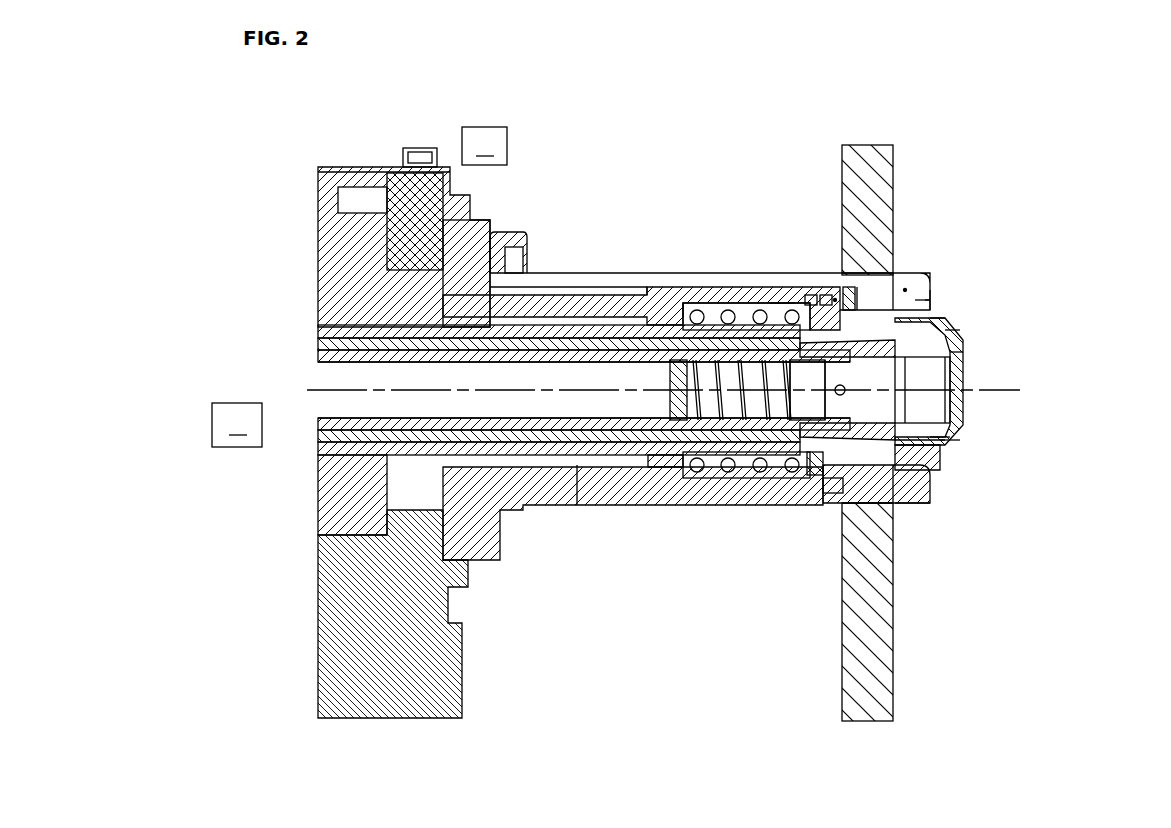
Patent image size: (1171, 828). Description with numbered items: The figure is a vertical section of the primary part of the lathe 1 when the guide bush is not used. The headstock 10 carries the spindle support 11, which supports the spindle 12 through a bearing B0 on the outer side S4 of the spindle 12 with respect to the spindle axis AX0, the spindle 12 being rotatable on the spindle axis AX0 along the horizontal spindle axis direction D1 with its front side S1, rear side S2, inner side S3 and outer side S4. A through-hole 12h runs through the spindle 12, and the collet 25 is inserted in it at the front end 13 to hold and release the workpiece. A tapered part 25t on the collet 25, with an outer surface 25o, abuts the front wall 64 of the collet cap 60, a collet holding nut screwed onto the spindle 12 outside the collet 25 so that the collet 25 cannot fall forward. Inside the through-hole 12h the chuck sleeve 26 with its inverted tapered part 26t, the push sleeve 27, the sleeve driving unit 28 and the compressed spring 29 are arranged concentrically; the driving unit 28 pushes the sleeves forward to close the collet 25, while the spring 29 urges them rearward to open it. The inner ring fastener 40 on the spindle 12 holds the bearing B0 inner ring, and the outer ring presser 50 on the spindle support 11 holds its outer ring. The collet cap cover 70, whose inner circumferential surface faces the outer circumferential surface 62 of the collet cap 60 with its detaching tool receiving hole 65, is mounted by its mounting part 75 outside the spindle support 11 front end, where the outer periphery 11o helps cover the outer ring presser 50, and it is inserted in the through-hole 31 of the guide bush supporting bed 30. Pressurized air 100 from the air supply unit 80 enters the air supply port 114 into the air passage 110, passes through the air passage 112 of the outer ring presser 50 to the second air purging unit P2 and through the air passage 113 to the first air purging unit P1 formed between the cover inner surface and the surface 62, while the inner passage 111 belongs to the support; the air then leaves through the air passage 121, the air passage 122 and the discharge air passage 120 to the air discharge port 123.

The lathe 1 is at (292, 130).
The headstock 10 is at (465, 680).
The spindle support 11 is at (577, 273).
The outer periphery 11o is at (778, 303).
The spindle 12 is at (602, 327).
The through-hole 12h is at (337, 408).
The front end 13 is at (950, 463).
The collet 25 is at (965, 375).
The collet outer surface 25o is at (950, 330).
The tapered part 25t is at (940, 436).
The chuck sleeve 26 is at (945, 437).
The inverted tapered part 26t is at (990, 422).
The push sleeve 27 is at (590, 467).
The sleeve driving unit 28 is at (318, 422).
The compressed spring 29 is at (672, 440).
The guide bush supporting bed 30 is at (893, 685).
The through-hole 31 is at (893, 505).
The inner ring fastener 40 is at (810, 295).
The outer ring presser 50 is at (848, 287).
The collet cap 60 is at (960, 335).
The outer circumferential surface 62 is at (930, 300).
The front wall 64 is at (963, 357).
The detaching tool receiving hole 65 is at (935, 316).
The collet cap cover 70 is at (915, 302).
The mounting part 75 is at (815, 470).
The air supply unit 80 is at (484, 222).
The air 100 is at (493, 175).
The air passage 110 is at (647, 283).
The inner housing 111 is at (702, 300).
The air passage 112 is at (826, 295).
The air passage 113 is at (900, 275).
The air supply port 114 is at (500, 222).
The air passage 120 is at (930, 497).
The air passage 121 is at (832, 503).
The air passage 122 is at (905, 505).
The air discharge port 123 is at (920, 505).
The spindle axis AX0 is at (318, 382).
The bearing B0 is at (793, 318).
The spindle axis direction D1 is at (639, 687).
The first air purging unit P1 is at (905, 290).
The second air purging unit P2 is at (835, 300).
The front side S1 is at (598, 662).
The rear side S2 is at (857, 287).
The inner side S3 is at (1114, 396).
The outer side S4 is at (1115, 355).